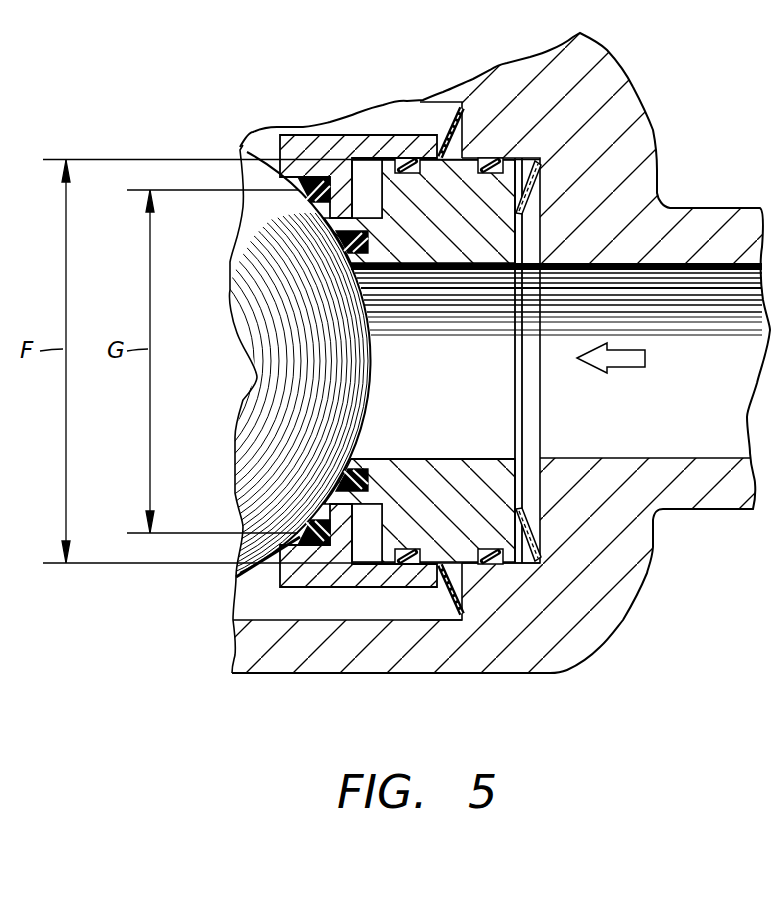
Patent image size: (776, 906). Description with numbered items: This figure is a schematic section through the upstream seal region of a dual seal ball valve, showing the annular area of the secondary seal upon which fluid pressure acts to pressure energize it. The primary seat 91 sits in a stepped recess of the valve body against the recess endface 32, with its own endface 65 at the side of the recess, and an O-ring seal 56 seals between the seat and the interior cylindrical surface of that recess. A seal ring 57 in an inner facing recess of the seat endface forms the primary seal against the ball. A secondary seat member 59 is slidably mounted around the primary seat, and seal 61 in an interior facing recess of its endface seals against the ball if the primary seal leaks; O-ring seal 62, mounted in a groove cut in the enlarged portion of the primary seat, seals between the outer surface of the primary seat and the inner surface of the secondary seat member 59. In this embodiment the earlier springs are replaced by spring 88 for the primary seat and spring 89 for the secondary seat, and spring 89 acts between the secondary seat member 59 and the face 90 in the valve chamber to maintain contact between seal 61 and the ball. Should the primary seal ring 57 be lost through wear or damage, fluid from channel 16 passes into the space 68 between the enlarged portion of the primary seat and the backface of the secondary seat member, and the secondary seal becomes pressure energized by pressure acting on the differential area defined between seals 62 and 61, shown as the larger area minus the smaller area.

The channel 16 is at (711, 456).
The endface 32 is at (514, 425).
The O-ring seal 56 is at (485, 158).
The seal ring 57 is at (335, 245).
The secondary seat member 59 is at (300, 133).
The seal 61 is at (304, 199).
The O-ring seal 62 is at (403, 162).
The endface 65 is at (516, 403).
The space 68 is at (365, 170).
The spring 88 is at (526, 158).
The spring 89 is at (443, 157).
The face 90 is at (438, 598).
The primary seat 91 is at (402, 457).